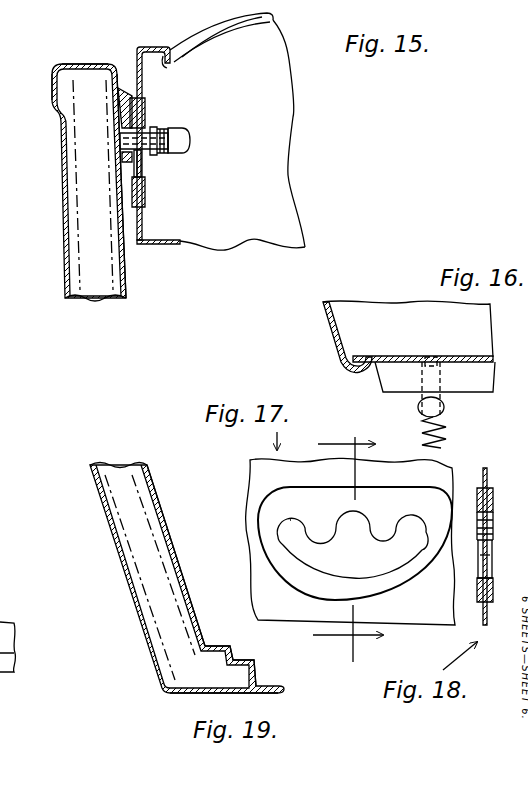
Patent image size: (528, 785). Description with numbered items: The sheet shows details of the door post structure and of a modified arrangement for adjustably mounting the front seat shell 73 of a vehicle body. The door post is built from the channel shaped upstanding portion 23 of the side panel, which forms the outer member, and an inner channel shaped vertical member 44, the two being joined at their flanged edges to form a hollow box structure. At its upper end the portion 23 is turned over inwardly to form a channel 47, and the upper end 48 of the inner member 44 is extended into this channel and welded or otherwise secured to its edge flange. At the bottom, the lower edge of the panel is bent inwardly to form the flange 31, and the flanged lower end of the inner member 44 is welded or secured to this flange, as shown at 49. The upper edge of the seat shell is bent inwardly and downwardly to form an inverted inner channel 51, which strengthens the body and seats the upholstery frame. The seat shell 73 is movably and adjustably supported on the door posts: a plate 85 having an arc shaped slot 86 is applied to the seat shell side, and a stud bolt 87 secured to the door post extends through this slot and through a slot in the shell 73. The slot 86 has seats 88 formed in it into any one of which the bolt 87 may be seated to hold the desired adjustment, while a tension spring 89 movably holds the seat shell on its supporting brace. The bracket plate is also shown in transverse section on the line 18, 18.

In FIG. 17, the section line 18 is at (348, 542).
In FIG. 15, the upstanding portion of side panel 23 is at (60, 226).
In FIG. 19, the upstanding portion of side panel 23 is at (125, 587).
In FIG. 19, the inwardly bent lower edge flange 31 is at (233, 696).
In FIG. 15, the inner channel shaped vertical member 44 is at (128, 275).
In FIG. 19, the inner channel shaped vertical member 44 is at (168, 530).
In FIG. 15, the channel 47 is at (100, 65).
In FIG. 15, the upper end of inner member 48 is at (107, 80).
In FIG. 19, the welded lower end connection 49 is at (277, 682).
In FIG. 15, the inverted inner channel 51 is at (168, 66).
In FIG. 15, the front seat shell 73 is at (272, 117).
In FIG. 16, the front seat shell 73 is at (367, 312).
In FIG. 15, the plate 85 is at (146, 107).
In FIG. 16, the plate 85 is at (423, 359).
In FIG. 17, the plate 85 is at (295, 572).
In FIG. 18, the plate 85 is at (500, 465).
In FIG. 15, the arc shaped slot 86 is at (143, 168).
In FIG. 17, the arc shaped slot 86 is at (293, 542).
In FIG. 18, the arc shaped slot 86 is at (480, 555).
In FIG. 15, the stud bolt 87 is at (200, 136).
In FIG. 16, the stud bolt 87 is at (431, 387).
In FIG. 17, the seat 88 is at (348, 514).
In FIG. 16, the tension spring 89 is at (447, 430).